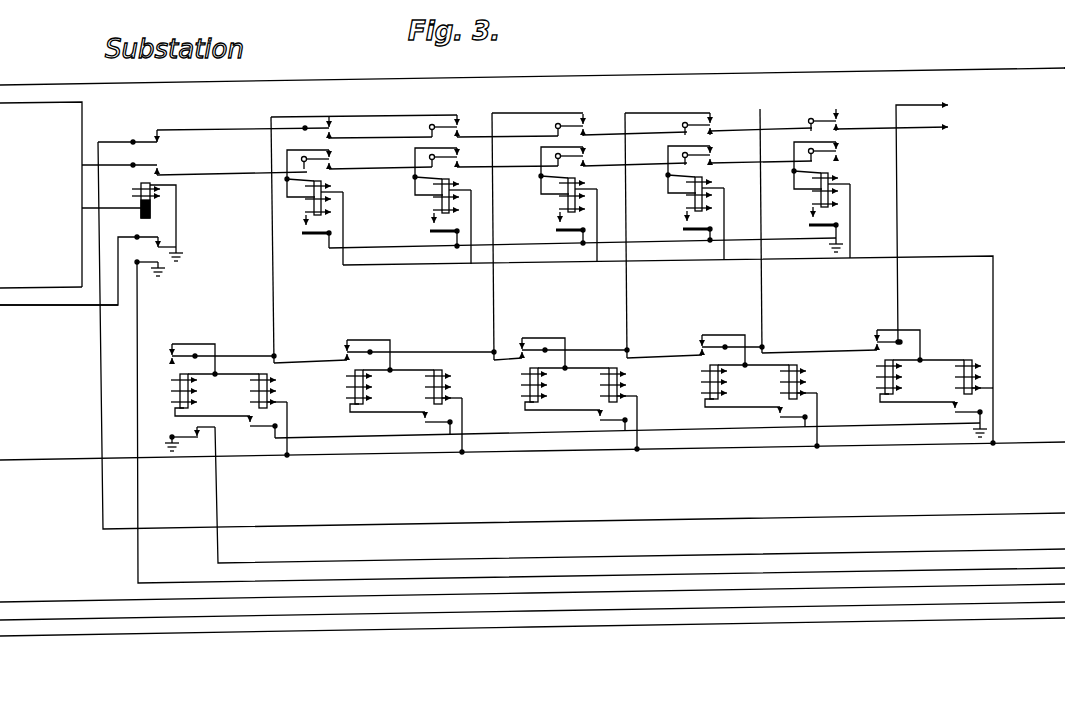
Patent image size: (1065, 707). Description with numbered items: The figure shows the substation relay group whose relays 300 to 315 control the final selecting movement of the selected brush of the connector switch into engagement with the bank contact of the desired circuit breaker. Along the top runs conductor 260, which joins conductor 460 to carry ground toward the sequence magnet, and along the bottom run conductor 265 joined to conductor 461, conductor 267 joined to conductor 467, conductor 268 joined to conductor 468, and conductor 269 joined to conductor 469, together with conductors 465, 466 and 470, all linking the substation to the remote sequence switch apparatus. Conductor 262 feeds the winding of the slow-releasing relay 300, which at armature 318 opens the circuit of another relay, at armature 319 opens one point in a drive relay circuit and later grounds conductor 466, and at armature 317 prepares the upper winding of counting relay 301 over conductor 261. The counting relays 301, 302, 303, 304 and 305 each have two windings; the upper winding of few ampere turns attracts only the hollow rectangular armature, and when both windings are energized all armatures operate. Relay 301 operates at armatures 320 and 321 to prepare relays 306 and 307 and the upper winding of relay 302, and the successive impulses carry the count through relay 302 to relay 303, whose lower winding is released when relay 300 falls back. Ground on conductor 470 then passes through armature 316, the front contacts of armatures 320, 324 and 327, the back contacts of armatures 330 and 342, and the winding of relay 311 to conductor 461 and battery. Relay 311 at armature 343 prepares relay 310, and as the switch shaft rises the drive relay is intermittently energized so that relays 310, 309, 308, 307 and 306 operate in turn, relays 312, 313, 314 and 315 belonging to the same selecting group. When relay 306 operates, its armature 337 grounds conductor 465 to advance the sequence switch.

The conductor 260 is at (21, 84).
The conductor 261 is at (41, 194).
The conductor 262 is at (40, 287).
The conductor 265 is at (24, 452).
The conductor 267 is at (40, 596).
The conductor 268 is at (48, 620).
The conductor 269 is at (60, 638).
The slow-releasing relay 300 is at (152, 212).
The counting relay 301 is at (316, 211).
The counting relay 302 is at (442, 211).
The counting relay 303 is at (568, 209).
The counting relay 304 is at (695, 208).
The counting relay 305 is at (822, 203).
The relay 306 is at (192, 397).
The relay 307 is at (270, 397).
The relay 308 is at (367, 394).
The relay 309 is at (445, 394).
The relay 310 is at (542, 392).
The relay 311 is at (620, 392).
The relay 312 is at (712, 389).
The relay 313 is at (797, 389).
The relay 314 is at (885, 386).
The relay 315 is at (975, 384).
The armature 316 is at (148, 141).
The armature 317 is at (160, 165).
The armature 318 is at (138, 237).
The armature 319 is at (143, 268).
The armature 320 is at (320, 127).
The armature 321 is at (332, 160).
The armature 324 is at (450, 124).
The armature 327 is at (575, 124).
The armature 330 is at (712, 113).
The armature 337 is at (184, 437).
The armature 342 is at (540, 348).
The armature 343 is at (604, 420).
The conductor 460 is at (1027, 68).
The conductor 461 is at (1028, 443).
The conductor 465 is at (995, 554).
The conductor 466 is at (1035, 571).
The conductor 467 is at (1056, 588).
The conductor 468 is at (1010, 603).
The conductor 469 is at (1060, 620).
The conductor 470 is at (1030, 513).